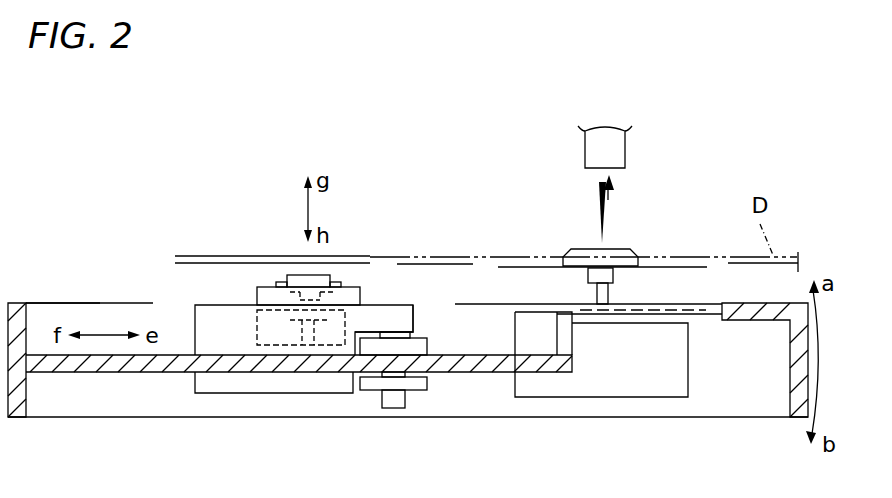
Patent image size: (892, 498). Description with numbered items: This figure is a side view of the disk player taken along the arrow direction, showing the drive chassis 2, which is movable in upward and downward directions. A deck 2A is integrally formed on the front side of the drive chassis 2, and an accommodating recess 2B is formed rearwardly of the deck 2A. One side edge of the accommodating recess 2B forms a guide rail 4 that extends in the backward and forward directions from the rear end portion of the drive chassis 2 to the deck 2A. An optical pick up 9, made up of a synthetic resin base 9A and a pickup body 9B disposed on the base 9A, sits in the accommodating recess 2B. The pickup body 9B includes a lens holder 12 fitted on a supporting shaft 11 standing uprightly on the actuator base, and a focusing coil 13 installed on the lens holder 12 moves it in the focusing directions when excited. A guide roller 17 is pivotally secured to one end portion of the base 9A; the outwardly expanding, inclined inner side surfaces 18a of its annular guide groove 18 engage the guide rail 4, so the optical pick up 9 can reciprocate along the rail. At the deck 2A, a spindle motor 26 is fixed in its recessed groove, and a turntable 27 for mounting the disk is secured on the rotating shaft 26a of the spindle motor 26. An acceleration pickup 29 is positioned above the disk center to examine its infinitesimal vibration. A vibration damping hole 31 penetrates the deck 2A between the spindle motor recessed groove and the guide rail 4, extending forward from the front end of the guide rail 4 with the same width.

The drive chassis 2 is at (82, 296).
The deck 2A is at (745, 320).
The accommodating recess 2B is at (170, 304).
The guide rail 4 is at (492, 372).
The optical pick up 9 is at (372, 140).
The base 9A is at (399, 290).
The pickup body 9B is at (353, 272).
The supporting shaft 11 is at (312, 340).
The lens holder 12 is at (298, 276).
The focusing coil 13 is at (280, 325).
The guide roller 17 is at (414, 338).
The annular guide groove 18 is at (443, 394).
The inner side surfaces 18a is at (420, 362).
The spindle motor 26 is at (653, 360).
The rotating shaft 26a is at (606, 296).
The turntable 27 is at (686, 262).
The acceleration pickup 29 is at (605, 142).
The vibration damping hole 31 is at (586, 314).